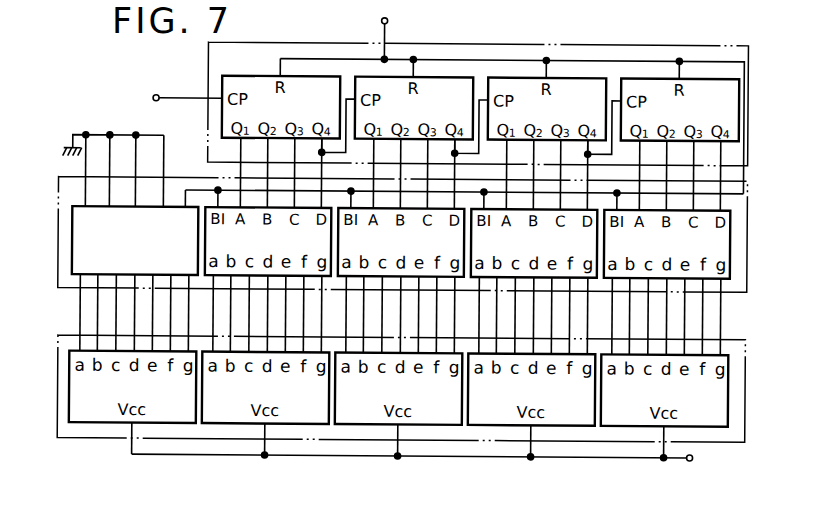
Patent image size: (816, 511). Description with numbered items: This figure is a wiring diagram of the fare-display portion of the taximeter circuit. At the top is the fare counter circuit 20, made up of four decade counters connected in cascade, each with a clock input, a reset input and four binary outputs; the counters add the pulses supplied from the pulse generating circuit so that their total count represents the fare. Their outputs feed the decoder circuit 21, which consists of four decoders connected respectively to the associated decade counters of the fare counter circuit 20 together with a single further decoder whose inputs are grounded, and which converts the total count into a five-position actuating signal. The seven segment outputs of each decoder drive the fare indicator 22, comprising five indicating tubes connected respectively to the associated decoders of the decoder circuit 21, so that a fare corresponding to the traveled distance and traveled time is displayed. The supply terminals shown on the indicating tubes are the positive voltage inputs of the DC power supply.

The fare counter circuit 20 is at (523, 44).
The decoder circuit 21 is at (200, 179).
The fare indicator 22 is at (213, 440).